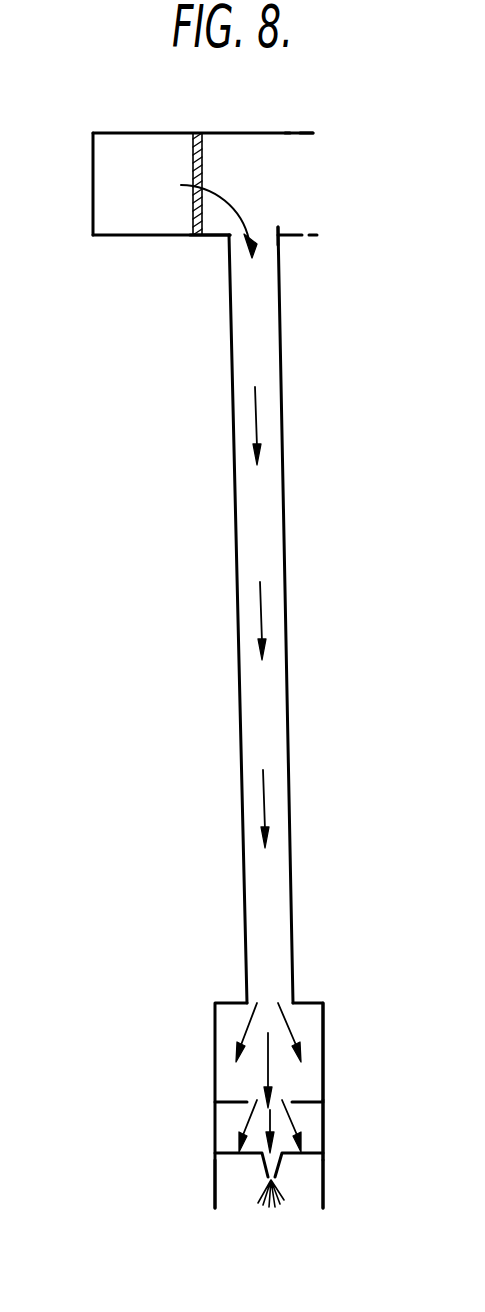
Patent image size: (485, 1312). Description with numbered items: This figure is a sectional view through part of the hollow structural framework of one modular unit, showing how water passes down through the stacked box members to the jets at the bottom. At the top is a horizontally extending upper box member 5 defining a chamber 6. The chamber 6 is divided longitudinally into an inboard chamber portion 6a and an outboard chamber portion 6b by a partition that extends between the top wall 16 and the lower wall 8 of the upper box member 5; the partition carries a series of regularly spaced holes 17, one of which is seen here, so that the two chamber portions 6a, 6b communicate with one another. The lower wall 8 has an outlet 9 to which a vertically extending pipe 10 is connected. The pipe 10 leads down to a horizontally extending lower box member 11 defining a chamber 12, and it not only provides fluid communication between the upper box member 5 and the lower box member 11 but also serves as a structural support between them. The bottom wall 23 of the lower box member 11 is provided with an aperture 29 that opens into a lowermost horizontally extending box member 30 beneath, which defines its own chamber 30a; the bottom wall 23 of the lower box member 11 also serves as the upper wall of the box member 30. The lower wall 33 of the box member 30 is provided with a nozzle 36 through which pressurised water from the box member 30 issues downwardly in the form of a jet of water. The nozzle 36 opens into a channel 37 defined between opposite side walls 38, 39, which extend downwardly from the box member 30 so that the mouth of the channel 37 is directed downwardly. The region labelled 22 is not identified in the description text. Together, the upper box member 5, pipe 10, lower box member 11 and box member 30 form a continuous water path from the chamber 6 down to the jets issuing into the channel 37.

The upper box member 5 is at (222, 131).
The chamber 6 is at (215, 223).
The inboard chamber portion 6a is at (288, 130).
The outboard chamber portion 6b is at (163, 225).
The lower wall 8 is at (283, 240).
The outlet 9 is at (263, 232).
The pipe 10 is at (280, 342).
The lower box member 11 is at (325, 1003).
The chamber 12 is at (355, 1049).
The top wall 16 is at (177, 130).
The hole 17 is at (202, 182).
The chamber housing 22 is at (228, 1002).
The bottom wall 23 is at (305, 1104).
The aperture 29 is at (260, 1097).
The lowermost box member 30 is at (327, 1140).
The chamber 30a is at (230, 1118).
The lower wall 33 is at (310, 1153).
The nozzle 36 is at (258, 1160).
The channel 37 is at (297, 1180).
The side wall 38 is at (215, 1185).
The side wall 39 is at (326, 1197).